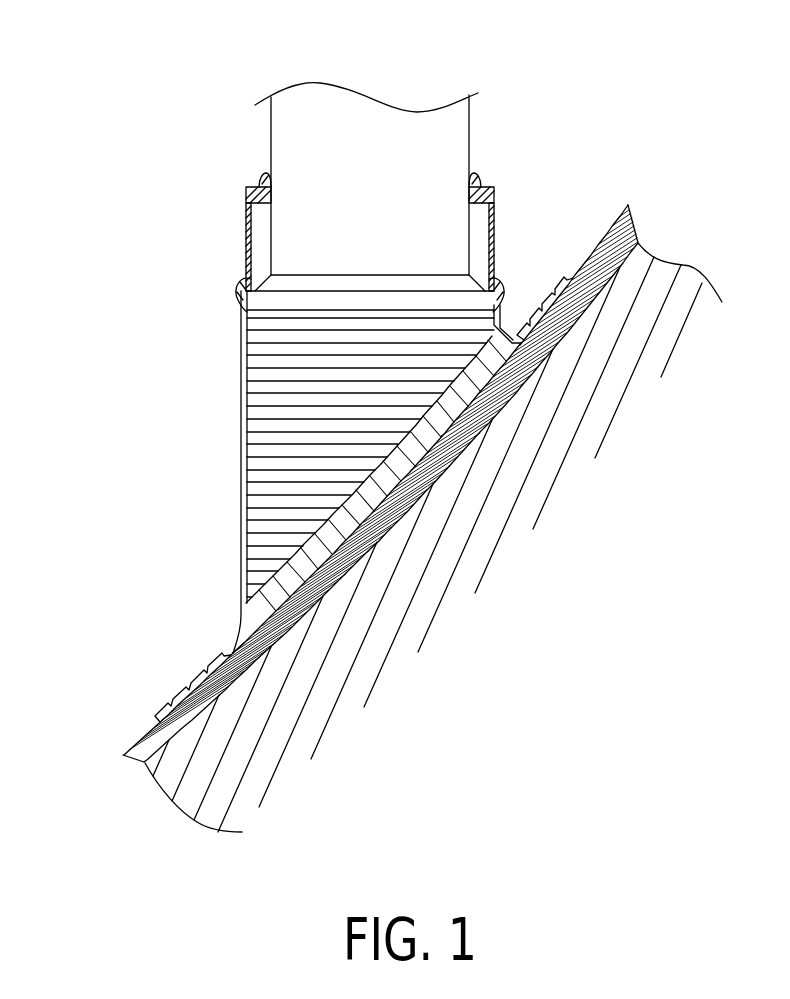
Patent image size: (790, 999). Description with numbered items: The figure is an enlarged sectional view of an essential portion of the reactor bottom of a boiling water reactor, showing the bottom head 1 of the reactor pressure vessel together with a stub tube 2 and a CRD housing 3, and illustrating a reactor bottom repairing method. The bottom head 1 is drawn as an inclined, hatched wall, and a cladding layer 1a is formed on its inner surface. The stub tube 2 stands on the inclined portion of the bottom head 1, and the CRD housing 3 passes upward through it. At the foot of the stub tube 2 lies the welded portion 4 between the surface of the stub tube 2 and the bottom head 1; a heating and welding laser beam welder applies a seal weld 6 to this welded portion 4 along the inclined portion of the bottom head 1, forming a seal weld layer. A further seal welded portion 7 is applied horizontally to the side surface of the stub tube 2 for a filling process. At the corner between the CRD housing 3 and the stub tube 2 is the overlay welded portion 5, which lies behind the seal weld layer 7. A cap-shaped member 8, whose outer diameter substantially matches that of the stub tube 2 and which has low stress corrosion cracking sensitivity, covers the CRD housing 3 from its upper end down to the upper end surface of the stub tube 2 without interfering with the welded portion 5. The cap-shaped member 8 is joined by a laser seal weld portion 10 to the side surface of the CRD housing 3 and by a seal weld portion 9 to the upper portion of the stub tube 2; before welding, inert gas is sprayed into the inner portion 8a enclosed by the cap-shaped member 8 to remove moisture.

The reactor pressure vessel bottom head 1 is at (188, 786).
The cladding layer 1a is at (168, 706).
The stub tube 2 is at (243, 398).
The CRD housing 3 is at (298, 112).
The welded portion between stub tube and bottom head 4 is at (300, 548).
The welded portion between stub tube and CRD housing 5 is at (382, 282).
The seal weld portion between stub tube and bottom head 6 is at (232, 622).
The seal welded portion welded to side surface of stub tube 7 is at (232, 452).
The cap-shaped member 8 is at (248, 245).
The space enclosed with cap-shaped member 8a is at (480, 242).
The seal weld portion between cap-shaped member and upper portion of stub tube 9 is at (243, 292).
The seal weld portion between cap-shaped member and CRD housing 10 is at (262, 181).